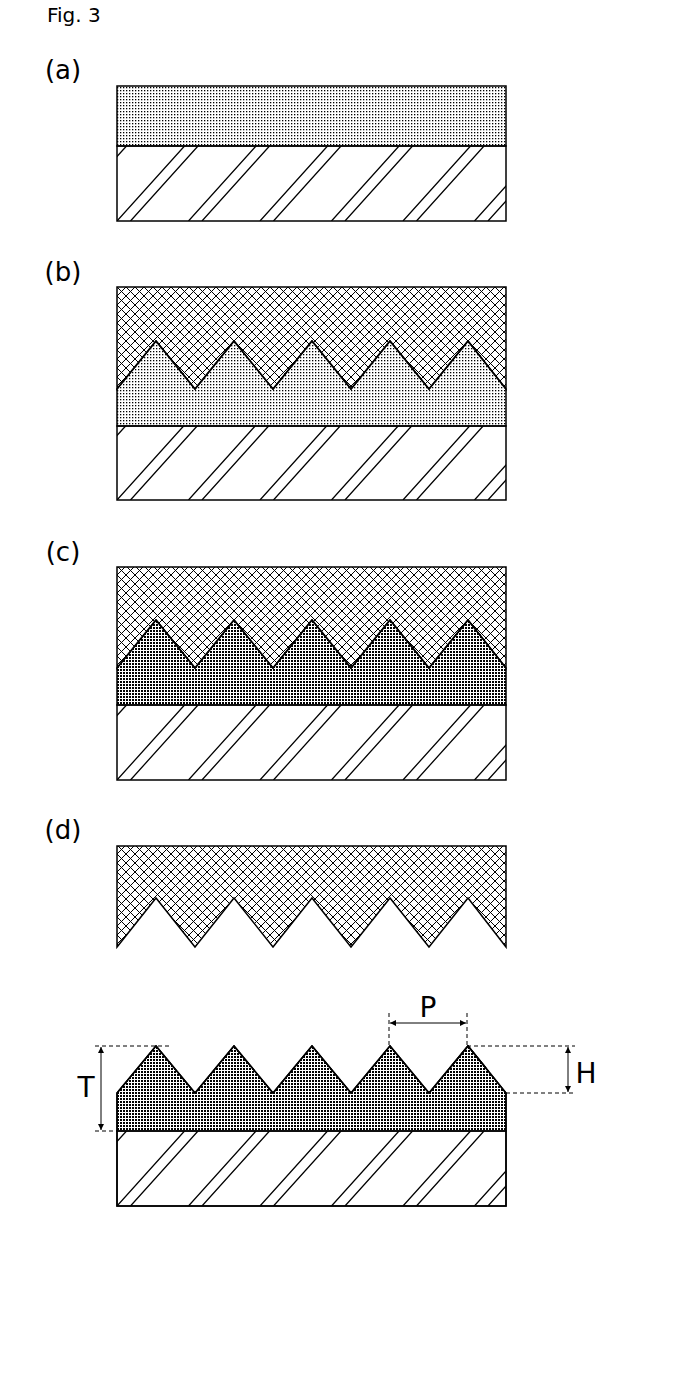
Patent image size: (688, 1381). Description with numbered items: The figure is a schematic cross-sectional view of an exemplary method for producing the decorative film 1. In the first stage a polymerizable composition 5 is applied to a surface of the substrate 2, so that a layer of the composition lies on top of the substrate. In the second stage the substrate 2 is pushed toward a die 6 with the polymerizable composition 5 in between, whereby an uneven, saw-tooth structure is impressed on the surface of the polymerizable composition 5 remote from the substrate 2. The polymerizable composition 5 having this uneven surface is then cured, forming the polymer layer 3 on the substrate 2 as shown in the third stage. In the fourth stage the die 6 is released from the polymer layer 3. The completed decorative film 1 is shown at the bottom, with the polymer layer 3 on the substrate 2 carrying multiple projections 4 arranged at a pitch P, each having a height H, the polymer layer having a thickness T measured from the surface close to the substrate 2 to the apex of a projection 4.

The decorative film 1 is at (117, 1032).
The substrate 2 is at (495, 178).
The polymer layer 3 is at (495, 683).
The projections 4 is at (473, 1043).
The polymerizable composition 5 is at (495, 108).
The die 6 is at (495, 323).